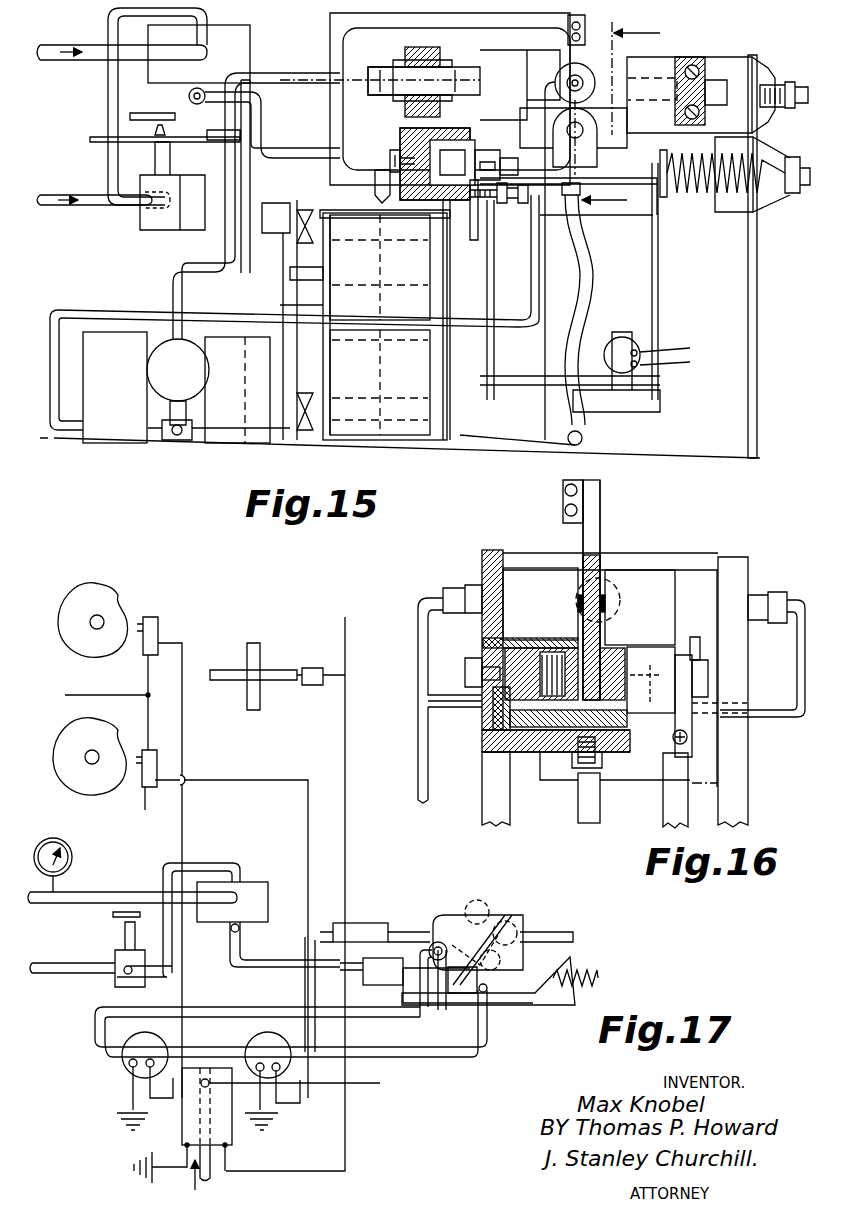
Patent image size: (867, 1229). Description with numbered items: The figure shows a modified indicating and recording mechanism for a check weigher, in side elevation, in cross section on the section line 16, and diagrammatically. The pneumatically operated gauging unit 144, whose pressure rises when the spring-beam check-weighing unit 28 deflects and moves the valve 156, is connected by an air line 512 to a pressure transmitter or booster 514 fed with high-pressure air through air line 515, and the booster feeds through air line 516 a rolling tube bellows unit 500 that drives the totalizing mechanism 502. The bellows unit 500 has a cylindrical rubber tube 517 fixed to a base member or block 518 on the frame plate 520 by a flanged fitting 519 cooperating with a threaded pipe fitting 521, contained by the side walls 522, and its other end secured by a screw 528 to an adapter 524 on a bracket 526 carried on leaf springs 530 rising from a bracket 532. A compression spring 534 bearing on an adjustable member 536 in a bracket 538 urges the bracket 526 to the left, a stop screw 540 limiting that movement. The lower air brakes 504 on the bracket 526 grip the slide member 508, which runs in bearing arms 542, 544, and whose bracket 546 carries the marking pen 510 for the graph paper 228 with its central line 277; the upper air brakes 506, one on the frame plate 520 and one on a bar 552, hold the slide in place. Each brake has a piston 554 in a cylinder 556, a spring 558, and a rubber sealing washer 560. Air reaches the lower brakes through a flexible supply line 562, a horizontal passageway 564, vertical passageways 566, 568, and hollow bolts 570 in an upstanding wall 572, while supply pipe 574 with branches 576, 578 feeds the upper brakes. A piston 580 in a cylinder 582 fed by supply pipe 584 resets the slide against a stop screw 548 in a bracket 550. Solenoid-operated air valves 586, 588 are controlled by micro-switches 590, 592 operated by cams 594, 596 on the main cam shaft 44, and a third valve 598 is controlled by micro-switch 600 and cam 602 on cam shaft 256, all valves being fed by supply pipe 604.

In FIG. 15, the air line 515 is at (97, 45).
In FIG. 17, the air line 515 is at (135, 895).
In FIG. 15, the pressure transmitter or booster 514 is at (199, 54).
In FIG. 17, the pressure transmitter or booster 514 is at (253, 882).
In FIG. 15, the air line 512 is at (105, 80).
In FIG. 17, the air line 512 is at (165, 865).
In FIG. 15, the valve 156 is at (172, 114).
In FIG. 15, the spring-beam check-weighing unit 28 is at (95, 133).
In FIG. 15, the pneumatically operated gauging unit 144 is at (150, 155).
In FIG. 17, the pneumatically operated gauging unit 144 is at (117, 945).
In FIG. 15, the air line 516 is at (260, 142).
In FIG. 17, the air line 516 is at (245, 965).
In FIG. 15, the supply pipe 584 is at (300, 73).
In FIG. 17, the supply pipe 584 is at (305, 1010).
In FIG. 15, the totalizing mechanism 502 is at (340, 115).
In FIG. 15, the bracket 546 is at (330, 22).
In FIG. 16, the bracket 546 is at (583, 480).
In FIG. 15, the cylinder 582 is at (375, 66).
In FIG. 17, the cylinder 582 is at (360, 923).
In FIG. 15, the bearing arm 542 is at (422, 58).
In FIG. 16, the bearing arm 542 is at (680, 555).
In FIG. 15, the piston 580 is at (455, 76).
In FIG. 15, the slide member 508 is at (540, 58).
In FIG. 16, the slide member 508 is at (600, 557).
In FIG. 17, the slide member 508 is at (523, 920).
In FIG. 15, the base member or block 518 is at (400, 133).
In FIG. 16, the base member or block 518 is at (608, 782).
In FIG. 15, the rolling tube bellows unit 500 is at (398, 140).
In FIG. 17, the rolling tube bellows unit 500 is at (375, 971).
In FIG. 15, the threaded pipe fitting 521 is at (390, 160).
In FIG. 15, the flanged fitting 519 is at (452, 140).
In FIG. 15, the side walls 522 is at (490, 150).
In FIG. 15, the adapter 524 is at (508, 160).
In FIG. 17, the adapter 524 is at (405, 998).
In FIG. 15, the marking pen 510 is at (378, 196).
In FIG. 15, the cylindrical rubber tube 517 is at (474, 200).
In FIG. 15, the stop screw 540 is at (512, 204).
In FIG. 15, the screw 528 is at (430, 212).
In FIG. 15, the bracket 526 is at (568, 186).
In FIG. 16, the bracket 526 is at (507, 734).
In FIG. 17, the bracket 526 is at (540, 998).
In FIG. 15, the lower air brakes 504 is at (600, 135).
In FIG. 16, the lower air brakes 504 is at (518, 645).
In FIG. 17, the lower air brakes 504 is at (480, 978).
In FIG. 15, the upper air brakes 506 is at (602, 105).
In FIG. 16, the upper air brakes 506 is at (543, 566).
In FIG. 17, the upper air brakes 506 is at (470, 908).
In FIG. 15, the section line 16 is at (637, 118).
In FIG. 15, the bar 552 is at (672, 57).
In FIG. 16, the bar 552 is at (488, 555).
In FIG. 15, the bearing arm 544 is at (705, 70).
In FIG. 15, the stop screw 548 is at (770, 85).
In FIG. 15, the bracket 550 is at (768, 118).
In FIG. 15, the compression spring 534 is at (707, 197).
In FIG. 17, the compression spring 534 is at (598, 975).
In FIG. 15, the adjustable member 536 is at (765, 215).
In FIG. 15, the bracket 538 is at (772, 200).
In FIG. 15, the flexible supply line 562 is at (588, 270).
In FIG. 16, the flexible supply line 562 is at (600, 820).
In FIG. 17, the flexible supply line 562 is at (458, 1058).
In FIG. 15, the leaf springs 530 is at (660, 315).
In FIG. 16, the leaf springs 530 is at (485, 820).
In FIG. 15, the supply pipe 574 is at (505, 327).
In FIG. 16, the supply pipe 574 is at (418, 790).
In FIG. 17, the supply pipe 574 is at (365, 1020).
In FIG. 15, the graph paper 228 is at (380, 267).
In FIG. 15, the central line 277 is at (378, 355).
In FIG. 15, the bracket 532 is at (612, 410).
In FIG. 15, the frame plate 520 is at (740, 365).
In FIG. 16, the frame plate 520 is at (735, 563).
In FIG. 15, the solenoid-operated air valve 588 is at (115, 387).
In FIG. 17, the solenoid-operated air valve 588 is at (125, 1057).
In FIG. 15, the solenoid-operated air valve 598 is at (178, 382).
In FIG. 17, the solenoid-operated air valve 598 is at (222, 1130).
In FIG. 15, the solenoid-operated air valve 586 is at (237, 390).
In FIG. 17, the solenoid-operated air valve 586 is at (293, 1103).
In FIG. 15, the supply pipe 604 is at (174, 442).
In FIG. 17, the supply pipe 604 is at (212, 1172).
In FIG. 17, the cam 596 is at (88, 583).
In FIG. 17, the main cam shaft 44 is at (102, 618).
In FIG. 17, the micro-switch 592 is at (158, 632).
In FIG. 17, the cam 594 is at (85, 792).
In FIG. 17, the micro-switch 590 is at (147, 800).
In FIG. 17, the cam shaft 256 is at (248, 700).
In FIG. 17, the micro-switch 600 is at (312, 667).
In FIG. 17, the cam 602 is at (275, 682).
In FIG. 16, the branch 576 is at (418, 625).
In FIG. 17, the branch 576 is at (430, 948).
In FIG. 16, the branch 578 is at (443, 697).
In FIG. 17, the branch 578 is at (446, 1008).
In FIG. 16, the vertical passageway 566 is at (493, 712).
In FIG. 16, the piston 554 is at (485, 735).
In FIG. 16, the cylinder 556 is at (540, 780).
In FIG. 16, the horizontal passageway 564 is at (600, 760).
In FIG. 16, the vertical passageway 568 is at (700, 725).
In FIG. 16, the bolt 570 is at (465, 672).
In FIG. 16, the upstanding wall 572 is at (482, 651).
In FIG. 16, the spring 558 is at (565, 638).
In FIG. 16, the rubber sealing washer 560 is at (505, 642).